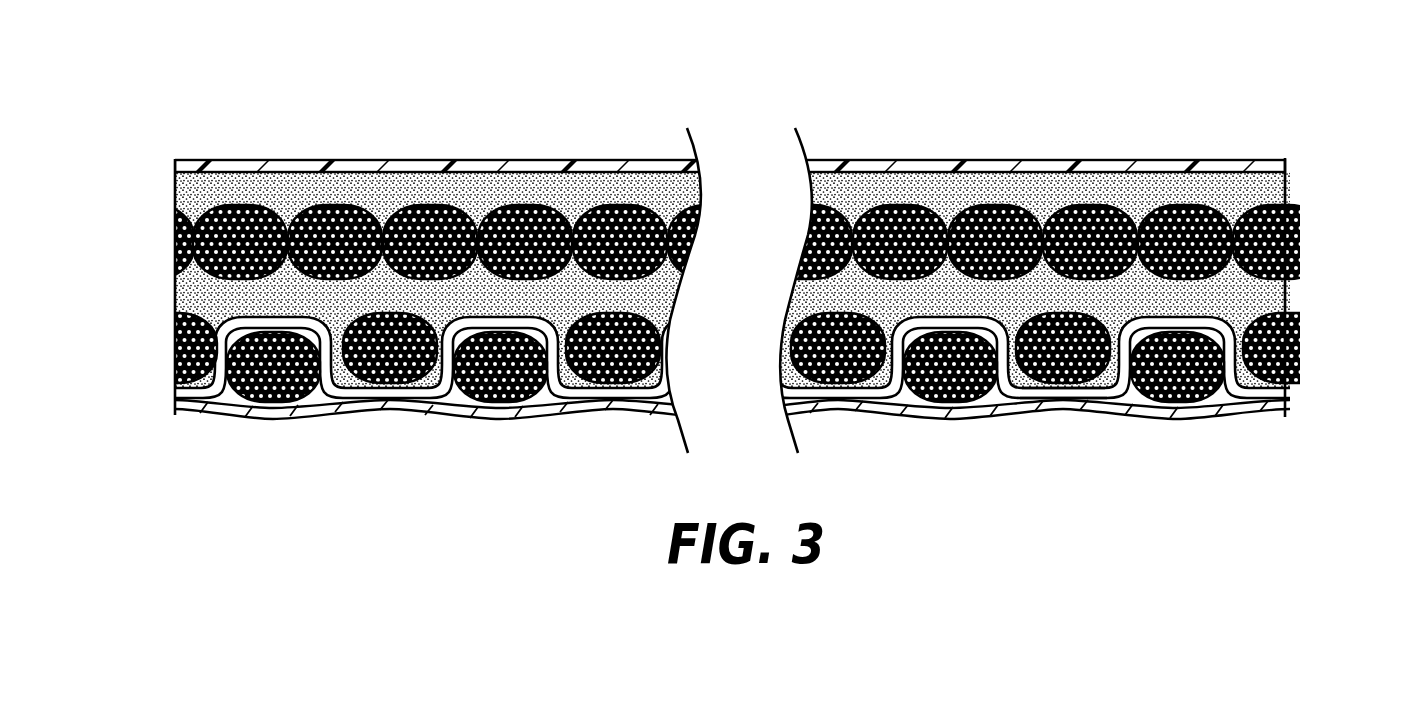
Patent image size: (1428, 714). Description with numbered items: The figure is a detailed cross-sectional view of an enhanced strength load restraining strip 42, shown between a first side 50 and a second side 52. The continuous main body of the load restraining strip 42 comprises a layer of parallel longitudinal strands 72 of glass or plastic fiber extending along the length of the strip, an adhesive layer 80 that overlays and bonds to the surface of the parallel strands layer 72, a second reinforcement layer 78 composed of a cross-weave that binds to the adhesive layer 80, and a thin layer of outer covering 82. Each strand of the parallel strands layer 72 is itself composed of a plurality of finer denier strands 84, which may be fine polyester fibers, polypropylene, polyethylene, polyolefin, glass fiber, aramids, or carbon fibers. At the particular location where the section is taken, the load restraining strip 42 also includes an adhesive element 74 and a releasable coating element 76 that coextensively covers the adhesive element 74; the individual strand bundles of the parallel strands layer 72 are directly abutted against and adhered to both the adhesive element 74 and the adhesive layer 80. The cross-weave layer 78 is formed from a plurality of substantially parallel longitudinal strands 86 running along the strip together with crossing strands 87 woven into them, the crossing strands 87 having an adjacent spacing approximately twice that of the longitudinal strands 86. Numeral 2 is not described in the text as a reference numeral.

The absorbent article 2 is at (1287, 216).
The load restraining strip 42 is at (838, 156).
The first side 50 is at (285, 160).
The second side 52 is at (505, 418).
The parallel longitudinal strands layer 72 is at (176, 247).
The adhesive element 74 is at (1145, 160).
The releasable coating element 76 is at (1040, 160).
The second reinforcement layer 78 is at (1285, 390).
The adhesive layer 80 is at (1215, 292).
The outer covering 82 is at (1190, 412).
The finer denier strands 84 is at (610, 210).
The longitudinal strands 86 is at (952, 392).
The crossing strands 87 is at (1055, 392).